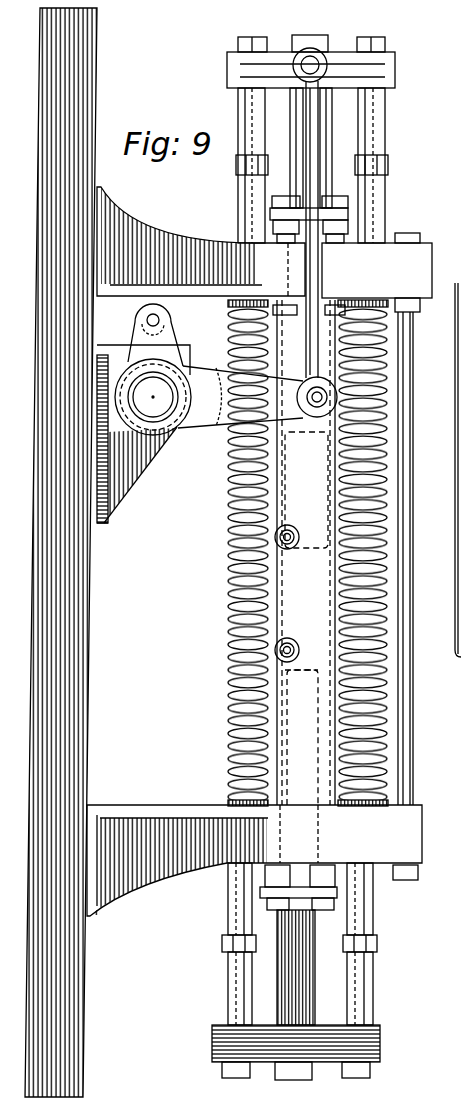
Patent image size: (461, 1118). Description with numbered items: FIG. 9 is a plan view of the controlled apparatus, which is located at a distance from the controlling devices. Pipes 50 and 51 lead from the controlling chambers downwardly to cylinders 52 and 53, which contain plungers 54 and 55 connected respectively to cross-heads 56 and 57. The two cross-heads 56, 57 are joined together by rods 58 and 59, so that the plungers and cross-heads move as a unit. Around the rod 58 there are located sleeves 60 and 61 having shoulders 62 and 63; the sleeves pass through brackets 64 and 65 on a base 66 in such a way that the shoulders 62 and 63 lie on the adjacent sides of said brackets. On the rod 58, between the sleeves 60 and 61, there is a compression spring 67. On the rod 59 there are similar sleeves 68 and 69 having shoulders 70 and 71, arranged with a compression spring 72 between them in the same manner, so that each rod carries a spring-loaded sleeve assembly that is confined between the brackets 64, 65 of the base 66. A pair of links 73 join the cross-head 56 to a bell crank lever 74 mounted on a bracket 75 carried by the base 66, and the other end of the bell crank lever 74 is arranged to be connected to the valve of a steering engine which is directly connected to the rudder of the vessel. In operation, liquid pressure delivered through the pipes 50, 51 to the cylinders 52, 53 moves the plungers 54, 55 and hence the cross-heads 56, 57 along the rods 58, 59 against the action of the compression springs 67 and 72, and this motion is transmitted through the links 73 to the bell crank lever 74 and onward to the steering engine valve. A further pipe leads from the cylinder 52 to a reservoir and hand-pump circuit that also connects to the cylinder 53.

The pipe 50 is at (292, 644).
The pipe 51 is at (293, 530).
The cylinder 52 is at (306, 490).
The cylinder 53 is at (301, 631).
The plunger 54 is at (311, 380).
The plunger 55 is at (302, 737).
The cross-head 56 is at (387, 72).
The cross-head 57 is at (372, 1046).
The rod 58 is at (236, 973).
The rod 59 is at (363, 973).
The sleeve 60 is at (230, 898).
The sleeve 61 is at (245, 190).
The shoulder 62 is at (220, 801).
The shoulder 63 is at (228, 300).
The bracket 64 is at (150, 231).
The bracket 65 is at (135, 822).
The base 66 is at (82, 667).
The compression spring 67 is at (226, 582).
The sleeve 68 is at (372, 208).
The sleeve 69 is at (372, 911).
The shoulder 70 is at (398, 308).
The shoulder 71 is at (396, 797).
The compression spring 72 is at (384, 491).
The links 73 is at (311, 146).
The bell crank lever 74 is at (203, 418).
The bracket 75 is at (122, 482).